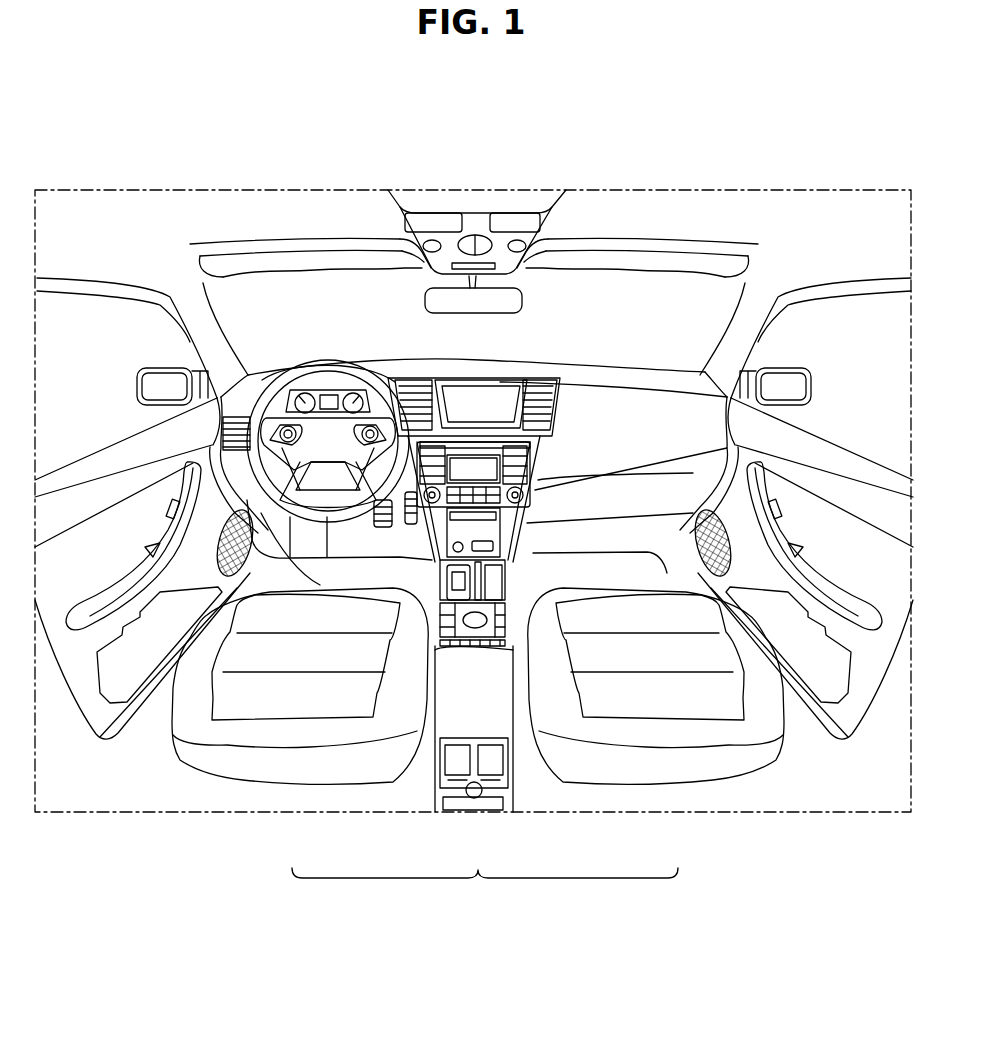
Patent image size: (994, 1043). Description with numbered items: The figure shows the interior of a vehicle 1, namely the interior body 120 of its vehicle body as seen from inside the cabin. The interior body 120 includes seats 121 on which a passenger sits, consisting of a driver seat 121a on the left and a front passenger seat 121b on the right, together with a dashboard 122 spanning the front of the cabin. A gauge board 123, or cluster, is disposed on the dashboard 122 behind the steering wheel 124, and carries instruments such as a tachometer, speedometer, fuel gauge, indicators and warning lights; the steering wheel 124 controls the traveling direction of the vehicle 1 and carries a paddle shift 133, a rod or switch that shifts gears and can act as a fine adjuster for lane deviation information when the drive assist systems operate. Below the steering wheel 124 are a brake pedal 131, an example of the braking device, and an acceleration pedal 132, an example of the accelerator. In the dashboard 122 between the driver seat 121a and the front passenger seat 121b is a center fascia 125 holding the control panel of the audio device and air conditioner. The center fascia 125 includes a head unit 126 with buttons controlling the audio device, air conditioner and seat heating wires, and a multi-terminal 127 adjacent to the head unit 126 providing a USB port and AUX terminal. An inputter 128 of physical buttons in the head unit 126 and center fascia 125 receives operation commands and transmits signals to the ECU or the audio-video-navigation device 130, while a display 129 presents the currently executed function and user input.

The vehicle 1 is at (230, 133).
The interior body 120 is at (661, 222).
The seats 121 is at (485, 888).
The driver seat 121a is at (288, 768).
The front passenger seat 121b is at (668, 768).
The dashboard 122 is at (653, 402).
The gauge board (cluster) 123 is at (318, 378).
The steering wheel 124 is at (342, 367).
The center fascia 125 is at (488, 520).
The head unit 126 is at (517, 478).
The multi-terminal 127 is at (505, 543).
The inputter 128 is at (518, 597).
The display 129 is at (472, 462).
The audio-video-navigation (AVN) device 130 is at (510, 378).
The brake pedal 131 is at (381, 525).
The acceleration pedal 132 is at (412, 523).
The paddle shift 133 is at (364, 402).